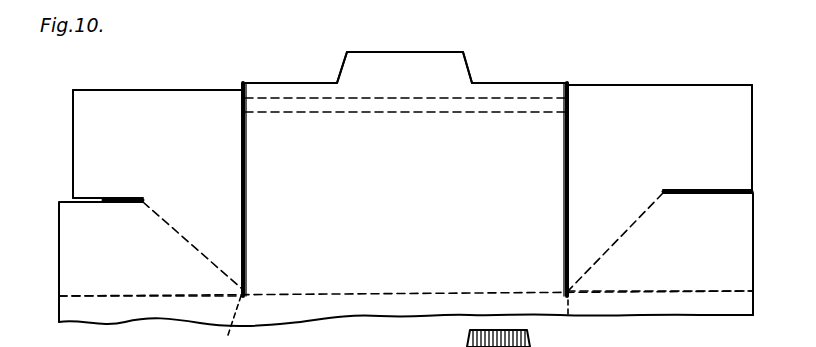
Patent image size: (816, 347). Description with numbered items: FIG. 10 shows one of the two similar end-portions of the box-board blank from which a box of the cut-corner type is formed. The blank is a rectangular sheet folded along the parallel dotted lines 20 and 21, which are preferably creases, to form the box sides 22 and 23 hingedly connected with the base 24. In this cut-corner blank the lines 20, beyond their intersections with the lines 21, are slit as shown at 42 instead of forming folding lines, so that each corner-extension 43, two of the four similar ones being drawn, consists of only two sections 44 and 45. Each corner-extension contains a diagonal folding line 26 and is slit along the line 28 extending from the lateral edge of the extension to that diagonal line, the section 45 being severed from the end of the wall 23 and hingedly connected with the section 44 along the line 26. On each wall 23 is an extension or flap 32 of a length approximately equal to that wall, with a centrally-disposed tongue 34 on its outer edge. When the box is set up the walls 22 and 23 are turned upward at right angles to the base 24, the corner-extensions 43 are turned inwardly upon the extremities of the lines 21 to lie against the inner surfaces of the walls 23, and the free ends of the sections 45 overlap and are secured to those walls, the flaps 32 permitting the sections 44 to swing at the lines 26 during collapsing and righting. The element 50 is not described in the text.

The folding line 20 is at (568, 300).
The folding line 21 is at (152, 296).
The box side 22 is at (406, 304).
The box side 23 is at (405, 174).
The base 24 is at (406, 163).
The diagonal folding line 26 is at (195, 250).
The slit line 28 is at (107, 196).
The flap 32 is at (492, 100).
The tongue 34 is at (358, 62).
The slit 42 is at (246, 183).
The corner-extension 43 is at (406, 141).
The section 44 is at (406, 257).
The section 45 is at (412, 141).
The hatched element 50 is at (532, 341).